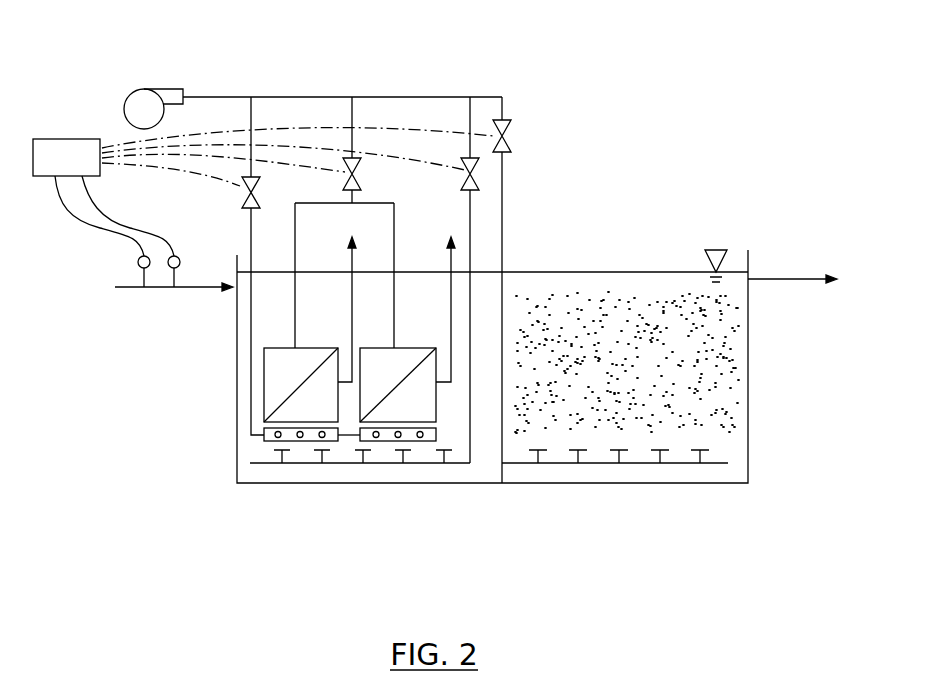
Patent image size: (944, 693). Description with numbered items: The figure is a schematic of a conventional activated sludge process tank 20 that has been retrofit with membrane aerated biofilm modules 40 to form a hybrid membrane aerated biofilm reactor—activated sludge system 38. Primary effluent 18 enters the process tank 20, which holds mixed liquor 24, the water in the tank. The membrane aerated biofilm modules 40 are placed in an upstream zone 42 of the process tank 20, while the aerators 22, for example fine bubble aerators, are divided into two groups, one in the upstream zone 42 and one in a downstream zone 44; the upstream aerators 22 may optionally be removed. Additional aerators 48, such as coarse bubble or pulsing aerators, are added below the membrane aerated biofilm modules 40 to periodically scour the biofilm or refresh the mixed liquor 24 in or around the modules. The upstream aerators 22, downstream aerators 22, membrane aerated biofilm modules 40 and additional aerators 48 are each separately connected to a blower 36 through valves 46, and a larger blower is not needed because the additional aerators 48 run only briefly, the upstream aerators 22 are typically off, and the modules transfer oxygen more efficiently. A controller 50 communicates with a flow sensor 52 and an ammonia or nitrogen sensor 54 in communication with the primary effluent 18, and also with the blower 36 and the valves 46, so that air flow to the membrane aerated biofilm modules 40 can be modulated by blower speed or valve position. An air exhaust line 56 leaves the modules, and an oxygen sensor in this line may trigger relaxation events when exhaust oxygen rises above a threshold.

The primary effluent 18 is at (187, 289).
The process tank 20 is at (750, 455).
The aerators 22 is at (404, 452).
The mixed liquor 24 is at (657, 295).
The blower 36 is at (156, 89).
The hybrid membrane aerated biofilm reactor—activated sludge system 38 is at (178, 520).
The membrane aerated biofilm modules 40 is at (265, 388).
The upstream zone 42 is at (295, 537).
The downstream zone 44 is at (619, 539).
The valves 46 is at (242, 192).
The additional aerators 48 is at (264, 443).
The controller 50 is at (68, 139).
The flow sensor 52 is at (142, 273).
The ammonia or nitrogen sensor 54 is at (172, 277).
The air exhaust line 56 is at (350, 295).